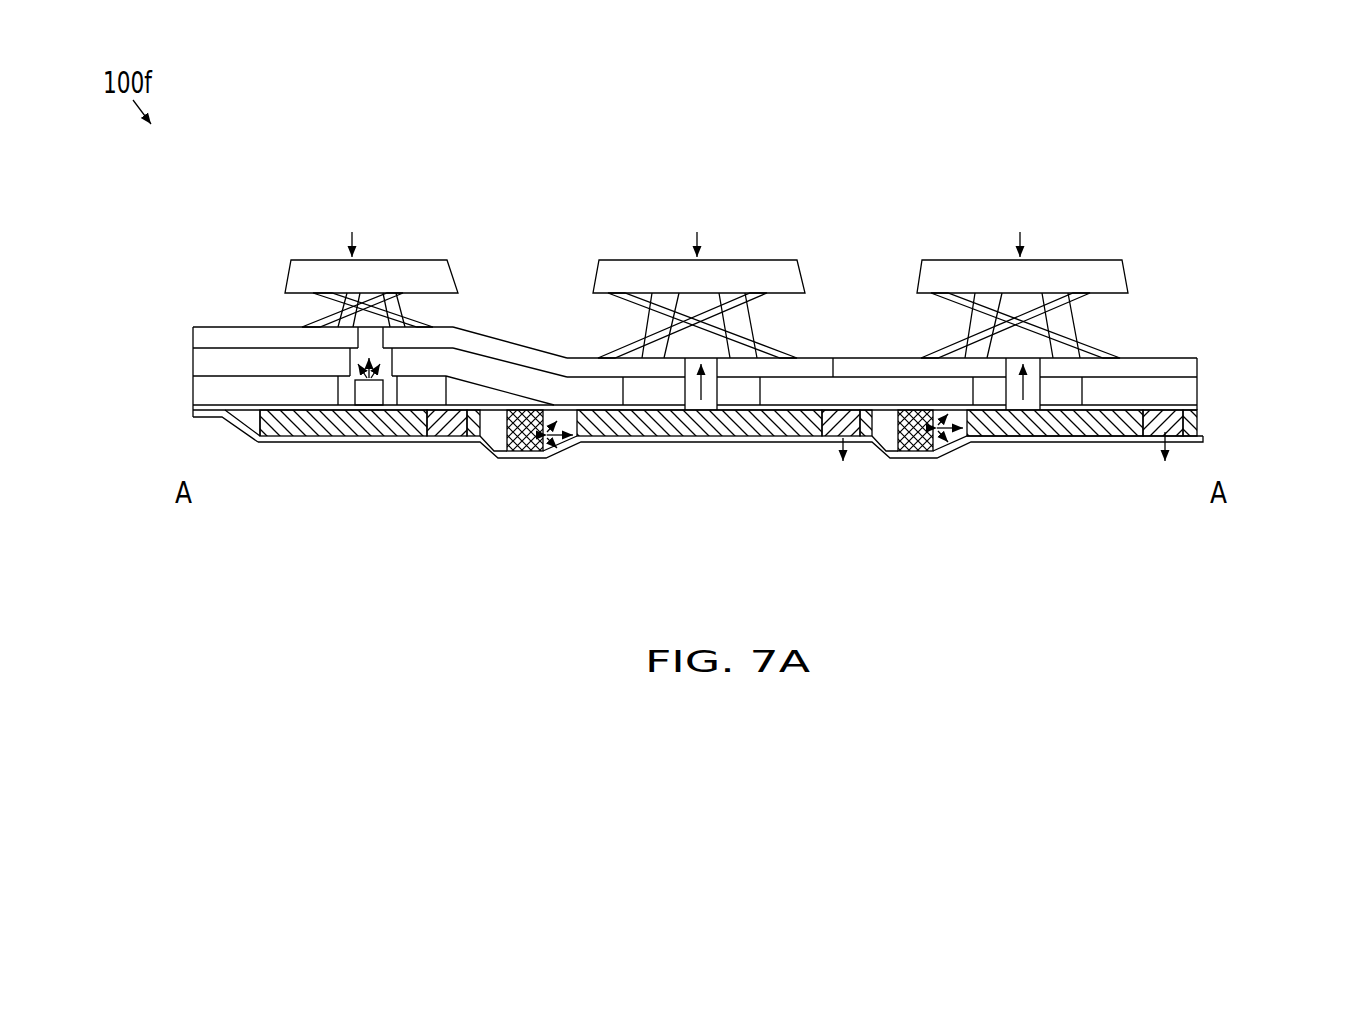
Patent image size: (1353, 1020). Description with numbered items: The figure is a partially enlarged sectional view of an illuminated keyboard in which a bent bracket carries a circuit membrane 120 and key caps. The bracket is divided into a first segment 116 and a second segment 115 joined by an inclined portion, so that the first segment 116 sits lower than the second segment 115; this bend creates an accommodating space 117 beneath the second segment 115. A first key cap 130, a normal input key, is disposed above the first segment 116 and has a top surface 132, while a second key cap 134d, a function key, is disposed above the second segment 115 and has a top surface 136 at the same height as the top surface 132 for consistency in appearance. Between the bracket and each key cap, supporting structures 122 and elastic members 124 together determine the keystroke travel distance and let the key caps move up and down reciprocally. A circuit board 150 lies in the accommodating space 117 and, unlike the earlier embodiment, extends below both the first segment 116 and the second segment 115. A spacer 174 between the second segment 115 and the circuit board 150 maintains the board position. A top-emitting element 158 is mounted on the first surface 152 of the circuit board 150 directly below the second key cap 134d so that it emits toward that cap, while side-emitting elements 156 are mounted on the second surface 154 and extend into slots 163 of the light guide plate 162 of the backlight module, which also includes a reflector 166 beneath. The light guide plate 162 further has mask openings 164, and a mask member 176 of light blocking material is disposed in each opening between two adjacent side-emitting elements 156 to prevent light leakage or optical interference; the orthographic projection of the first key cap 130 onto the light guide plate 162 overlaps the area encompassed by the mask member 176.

The second segment 115 is at (205, 356).
The first segment 116 is at (1190, 395).
The accommodating space 117 is at (463, 387).
The circuit membrane 120 is at (205, 337).
The supporting structures 122 is at (757, 302).
The elastic members 124 is at (693, 300).
The first key cap 130 is at (636, 262).
The top surface 132 is at (855, 226).
The second key cap 134d is at (307, 263).
The top surface 136 is at (350, 225).
The circuit board 150 is at (196, 408).
The first surface 152 is at (242, 402).
The second surface 154 is at (243, 430).
The side-emitting element 156 is at (522, 452).
The top-emitting element 158 is at (362, 385).
The light guide plate 162 is at (1200, 425).
The slot 163 is at (483, 424).
The mask opening 164 is at (427, 426).
The reflector 166 is at (1203, 440).
The spacer 174 is at (203, 395).
The mask member 176 is at (452, 440).